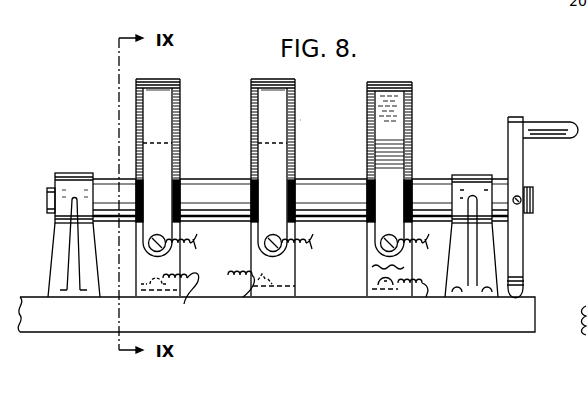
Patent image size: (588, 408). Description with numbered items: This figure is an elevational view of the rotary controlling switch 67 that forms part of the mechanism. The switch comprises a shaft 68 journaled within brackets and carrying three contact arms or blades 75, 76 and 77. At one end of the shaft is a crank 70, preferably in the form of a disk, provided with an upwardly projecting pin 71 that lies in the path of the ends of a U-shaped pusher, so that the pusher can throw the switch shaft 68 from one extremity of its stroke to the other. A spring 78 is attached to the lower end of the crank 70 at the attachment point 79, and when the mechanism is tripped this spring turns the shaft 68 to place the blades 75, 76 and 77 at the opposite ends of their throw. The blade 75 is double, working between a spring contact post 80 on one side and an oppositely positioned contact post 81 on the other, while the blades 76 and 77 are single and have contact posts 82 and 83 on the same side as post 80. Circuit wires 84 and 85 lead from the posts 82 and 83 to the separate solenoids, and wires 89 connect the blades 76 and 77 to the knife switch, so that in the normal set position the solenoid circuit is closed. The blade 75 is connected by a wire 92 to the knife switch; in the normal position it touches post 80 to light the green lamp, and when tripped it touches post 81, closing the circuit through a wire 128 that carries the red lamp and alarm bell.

The rotary controlling switch 67 is at (320, 131).
The shaft 68 is at (208, 178).
The crank 70 is at (518, 170).
The pin 71 is at (553, 122).
The contact arm 75 is at (398, 112).
The contact arm 76 is at (271, 73).
The contact arm 77 is at (158, 72).
The spring 78 is at (525, 292).
The spring attachment point 79 is at (524, 283).
The spring contact post 80 is at (406, 175).
The contact post 81 is at (369, 274).
The contact post 82 is at (273, 175).
The contact post 83 is at (158, 174).
The circuit wire 84 is at (243, 297).
The circuit wire 85 is at (170, 298).
The wires 89 is at (245, 252).
The wire 92 is at (430, 247).
The wire 128 is at (430, 289).